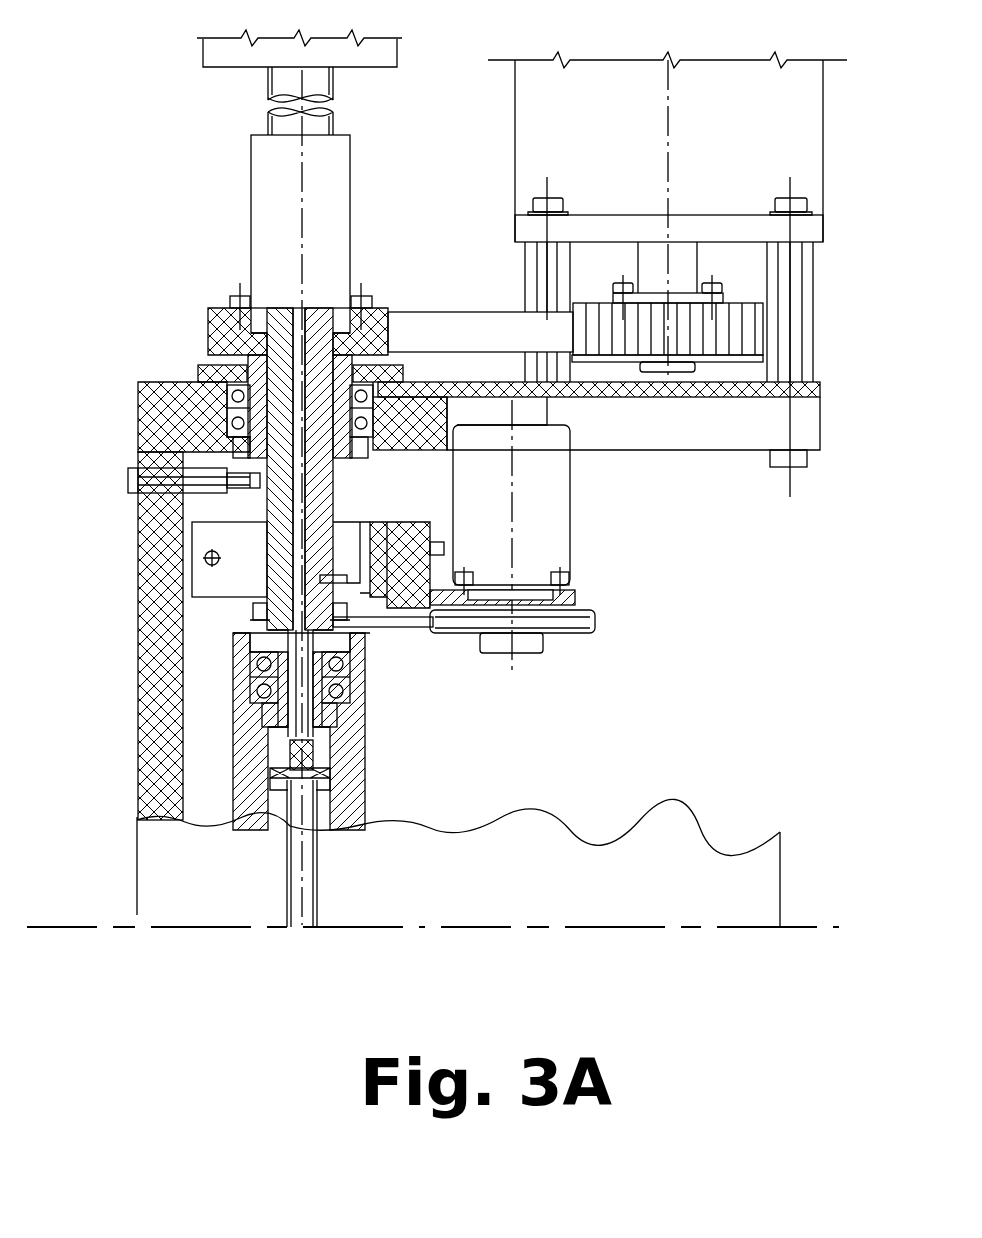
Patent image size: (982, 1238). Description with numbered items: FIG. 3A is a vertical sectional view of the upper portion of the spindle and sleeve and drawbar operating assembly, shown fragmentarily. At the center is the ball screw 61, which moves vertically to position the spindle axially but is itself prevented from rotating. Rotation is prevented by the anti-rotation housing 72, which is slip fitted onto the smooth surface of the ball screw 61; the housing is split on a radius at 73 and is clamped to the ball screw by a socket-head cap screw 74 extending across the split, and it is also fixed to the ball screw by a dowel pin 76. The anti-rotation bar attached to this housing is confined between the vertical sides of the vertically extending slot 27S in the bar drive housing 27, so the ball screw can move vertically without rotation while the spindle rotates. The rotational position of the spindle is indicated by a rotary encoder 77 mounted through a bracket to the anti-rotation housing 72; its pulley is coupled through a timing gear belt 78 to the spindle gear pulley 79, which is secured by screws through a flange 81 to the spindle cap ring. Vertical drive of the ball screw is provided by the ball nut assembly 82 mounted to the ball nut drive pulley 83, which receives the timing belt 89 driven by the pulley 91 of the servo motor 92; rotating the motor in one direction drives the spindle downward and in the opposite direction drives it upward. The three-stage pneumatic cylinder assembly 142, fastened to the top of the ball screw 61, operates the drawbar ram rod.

The three-stage pneumatic cylinder assembly 142 is at (186, 60).
The ball nut assembly 82 is at (260, 213).
The ball nut drive pulley 83 is at (218, 308).
The timing belt 89 is at (438, 318).
The servo motor 92 is at (790, 163).
The pulley 91 is at (727, 305).
The rotary encoder 77 is at (568, 513).
The dowel pin 76 is at (335, 575).
The anti-rotation housing 72 is at (376, 522).
The split 73 is at (200, 527).
The socket-head cap screw 74 is at (200, 550).
The ball screw 61 is at (275, 568).
The flange 81 is at (255, 610).
The spindle gear pulley 79 is at (240, 635).
The timing gear belt 78 is at (398, 625).
The bar drive housing 27 is at (137, 837).
The vertically extending slot 27S is at (283, 890).